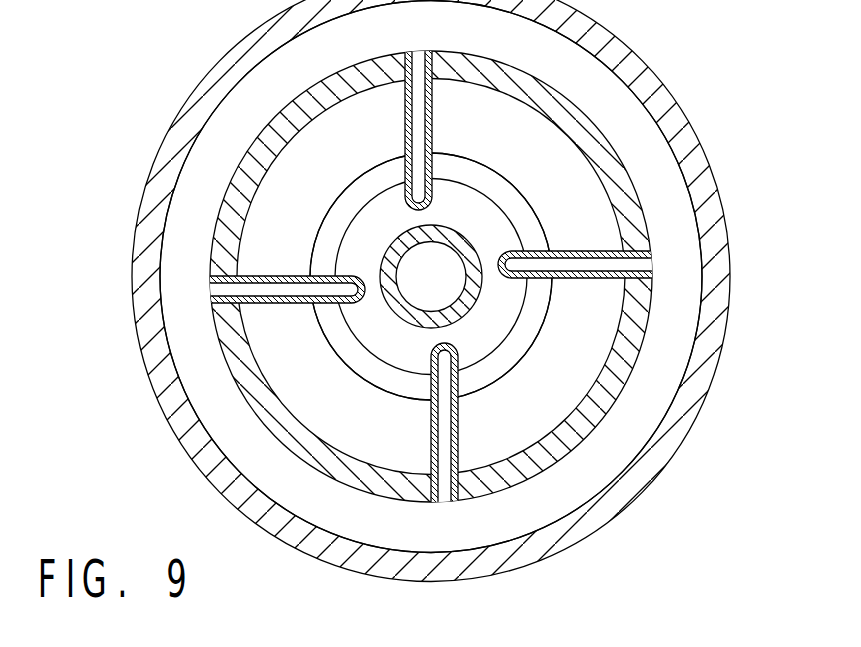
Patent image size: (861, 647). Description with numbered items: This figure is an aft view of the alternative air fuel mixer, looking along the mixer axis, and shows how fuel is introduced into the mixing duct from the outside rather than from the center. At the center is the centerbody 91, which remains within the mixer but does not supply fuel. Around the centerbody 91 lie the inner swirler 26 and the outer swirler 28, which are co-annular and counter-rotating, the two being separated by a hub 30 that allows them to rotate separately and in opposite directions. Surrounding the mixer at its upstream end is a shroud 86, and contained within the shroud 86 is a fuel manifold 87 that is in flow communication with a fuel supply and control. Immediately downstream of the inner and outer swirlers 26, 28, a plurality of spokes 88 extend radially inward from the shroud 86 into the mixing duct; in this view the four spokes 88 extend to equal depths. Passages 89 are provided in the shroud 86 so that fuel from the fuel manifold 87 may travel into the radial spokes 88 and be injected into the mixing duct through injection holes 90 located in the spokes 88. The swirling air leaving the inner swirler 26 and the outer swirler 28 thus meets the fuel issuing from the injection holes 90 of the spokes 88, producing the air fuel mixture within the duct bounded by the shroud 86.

The inner swirler 26 is at (418, 356).
The outer swirler 28 is at (313, 376).
The hub 30 is at (458, 172).
The shroud 86 is at (694, 412).
The fuel manifold 87 is at (576, 502).
The spokes 88 is at (565, 250).
The passages 89 is at (444, 502).
The injection holes 90 is at (615, 281).
The centerbody 91 is at (437, 227).